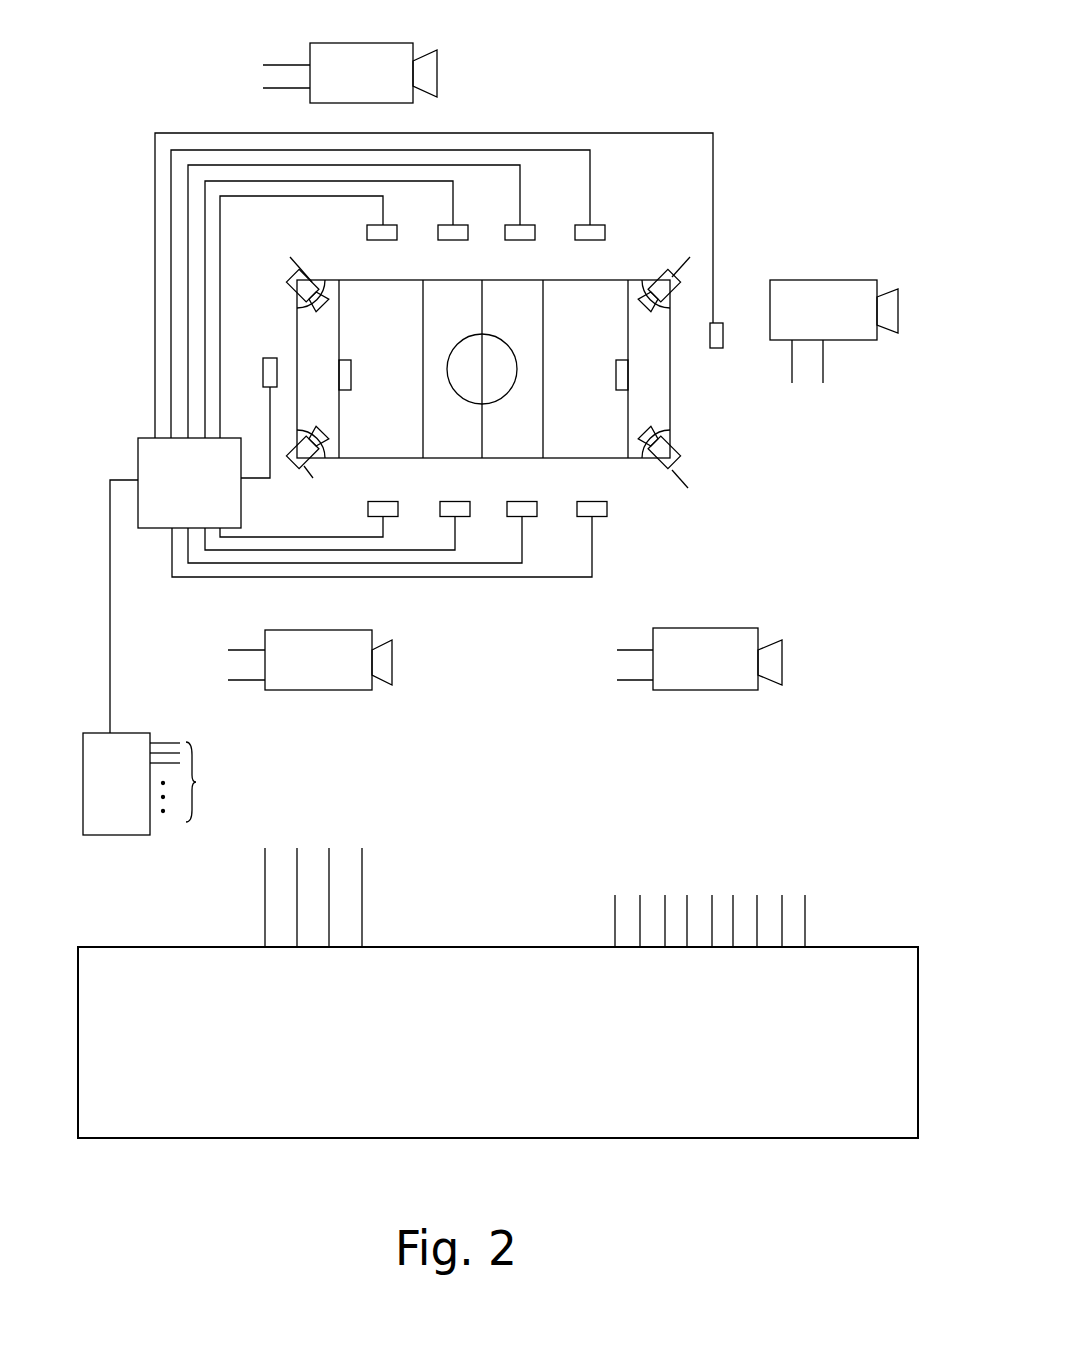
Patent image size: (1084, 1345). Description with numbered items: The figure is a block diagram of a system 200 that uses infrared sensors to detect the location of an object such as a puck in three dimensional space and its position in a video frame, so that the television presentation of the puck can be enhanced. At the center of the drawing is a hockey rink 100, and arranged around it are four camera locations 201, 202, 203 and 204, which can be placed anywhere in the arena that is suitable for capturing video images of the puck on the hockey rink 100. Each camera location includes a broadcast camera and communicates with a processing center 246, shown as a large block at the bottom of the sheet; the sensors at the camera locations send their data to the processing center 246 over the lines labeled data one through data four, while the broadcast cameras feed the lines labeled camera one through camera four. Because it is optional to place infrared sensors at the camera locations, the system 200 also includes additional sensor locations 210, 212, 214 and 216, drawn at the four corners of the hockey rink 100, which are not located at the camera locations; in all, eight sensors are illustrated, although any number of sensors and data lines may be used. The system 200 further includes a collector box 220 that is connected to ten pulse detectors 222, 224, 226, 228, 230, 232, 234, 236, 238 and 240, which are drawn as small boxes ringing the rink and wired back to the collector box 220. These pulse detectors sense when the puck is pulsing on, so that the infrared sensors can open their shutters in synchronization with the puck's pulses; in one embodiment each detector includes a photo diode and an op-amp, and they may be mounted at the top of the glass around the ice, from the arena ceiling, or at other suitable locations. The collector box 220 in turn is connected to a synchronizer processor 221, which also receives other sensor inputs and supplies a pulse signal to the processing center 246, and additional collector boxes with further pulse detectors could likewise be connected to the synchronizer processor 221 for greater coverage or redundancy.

The hockey rink 100 is at (670, 378).
The system 200 is at (743, 92).
The camera location 201 is at (834, 370).
The camera location 202 is at (305, 59).
The camera location 203 is at (265, 644).
The camera location 204 is at (655, 641).
The sensor location 210 is at (339, 286).
The sensor location 212 is at (346, 457).
The sensor location 214 is at (639, 457).
The sensor location 216 is at (623, 288).
The collector box 220 is at (168, 468).
The synchronizer processor 221 is at (175, 807).
The pulse detector 222 is at (263, 360).
The pulse detector 224 is at (392, 494).
The pulse detector 226 is at (466, 494).
The pulse detector 228 is at (534, 494).
The pulse detector 230 is at (619, 526).
The pulse detector 232 is at (721, 325).
The pulse detector 234 is at (577, 250).
The pulse detector 236 is at (507, 250).
The pulse detector 238 is at (440, 250).
The pulse detector 240 is at (369, 250).
The processing center 246 is at (498, 993).